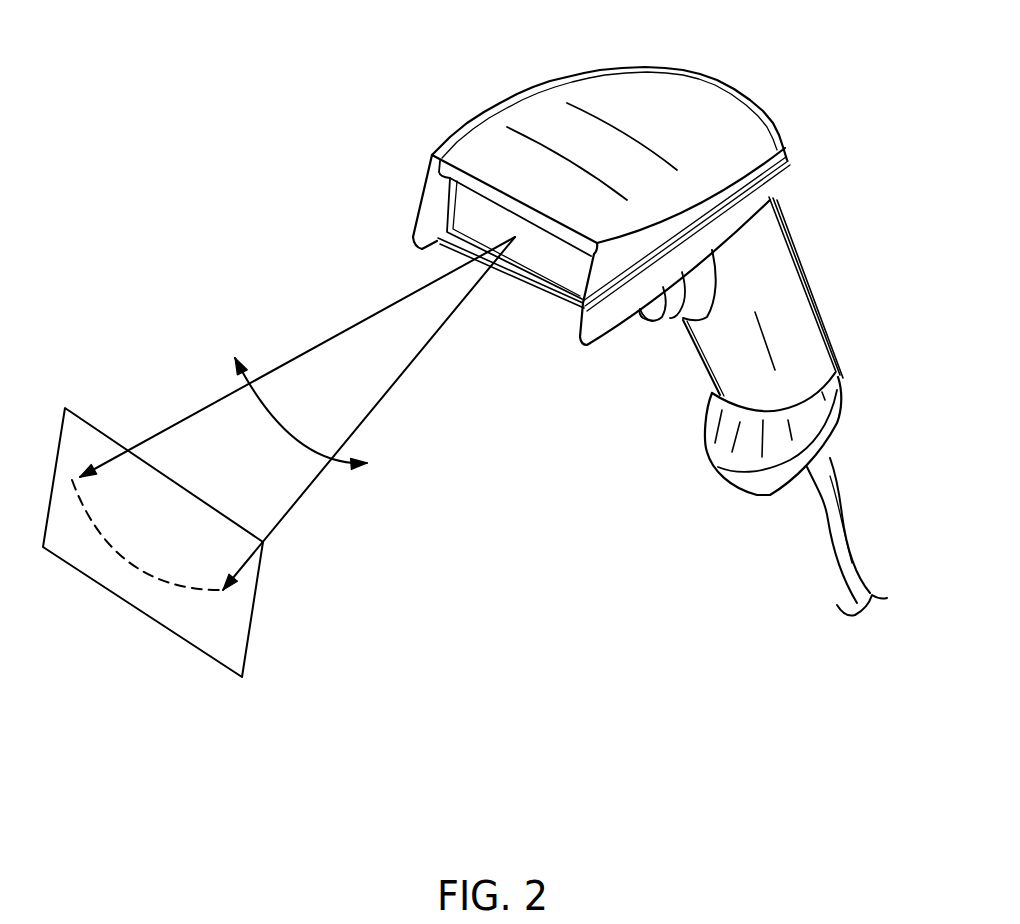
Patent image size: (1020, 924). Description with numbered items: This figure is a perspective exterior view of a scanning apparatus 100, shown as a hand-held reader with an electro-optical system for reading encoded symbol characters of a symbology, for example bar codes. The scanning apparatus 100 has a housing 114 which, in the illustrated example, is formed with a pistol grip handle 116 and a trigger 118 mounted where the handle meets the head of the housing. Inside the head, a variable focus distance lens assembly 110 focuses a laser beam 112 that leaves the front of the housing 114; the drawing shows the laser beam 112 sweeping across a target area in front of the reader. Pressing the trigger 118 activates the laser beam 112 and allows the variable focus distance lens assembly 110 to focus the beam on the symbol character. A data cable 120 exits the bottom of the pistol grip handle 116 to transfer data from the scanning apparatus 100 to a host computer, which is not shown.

The scanning apparatus 100 is at (680, 318).
The variable focus distance lens assembly 110 is at (500, 270).
The laser beam 112 is at (313, 345).
The housing 114 is at (653, 213).
The pistol grip handle 116 is at (803, 343).
The trigger 118 is at (641, 320).
The data cable 120 is at (842, 520).